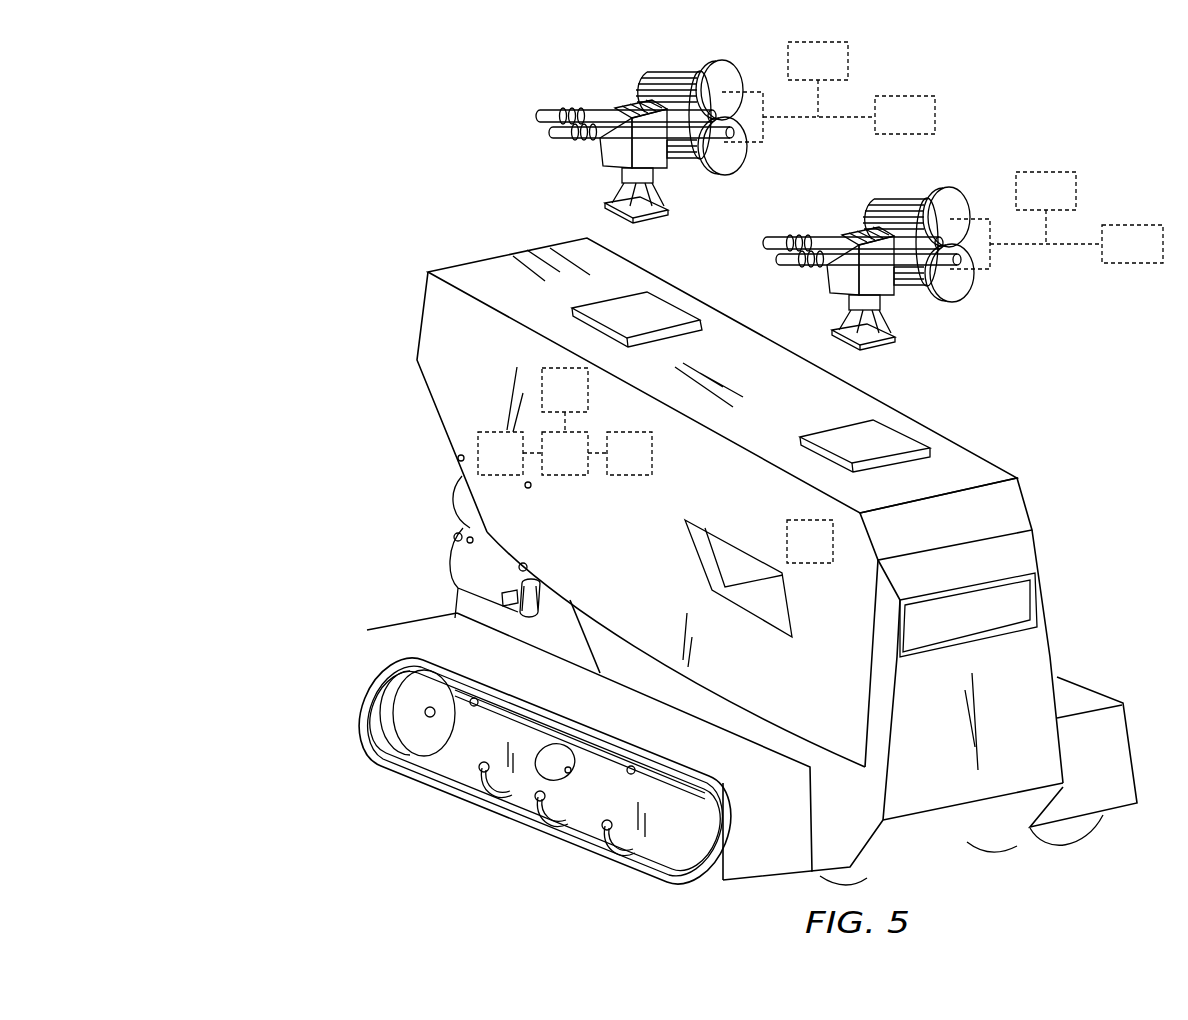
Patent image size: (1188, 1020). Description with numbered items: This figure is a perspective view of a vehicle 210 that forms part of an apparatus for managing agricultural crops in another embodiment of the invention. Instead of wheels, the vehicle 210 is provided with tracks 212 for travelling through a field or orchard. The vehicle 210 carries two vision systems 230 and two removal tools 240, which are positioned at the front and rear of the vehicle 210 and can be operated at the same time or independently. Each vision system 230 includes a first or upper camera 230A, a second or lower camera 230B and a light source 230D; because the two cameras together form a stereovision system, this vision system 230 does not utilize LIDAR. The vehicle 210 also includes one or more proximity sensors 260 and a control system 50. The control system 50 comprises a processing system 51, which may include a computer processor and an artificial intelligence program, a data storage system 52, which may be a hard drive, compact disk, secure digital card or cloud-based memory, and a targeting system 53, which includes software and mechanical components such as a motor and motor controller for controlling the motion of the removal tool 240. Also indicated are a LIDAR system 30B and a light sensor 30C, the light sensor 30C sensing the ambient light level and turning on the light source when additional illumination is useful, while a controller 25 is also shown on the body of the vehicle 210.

The vehicle 210 is at (377, 282).
The tracks 212 is at (665, 872).
The vision system 230 is at (612, 85).
The first or upper camera 230A is at (722, 78).
The second or lower camera 230B is at (728, 158).
The light source 230D is at (678, 118).
The removal tool 240 is at (678, 145).
The proximity sensor 260 is at (1012, 605).
The controller 25 is at (810, 541).
The control system 50 is at (565, 443).
The processing system 51 is at (565, 390).
The data storage system 52 is at (629, 453).
The targeting system 53 is at (500, 453).
The LIDAR system 30B is at (932, 143).
The light sensor 30C is at (942, 180).